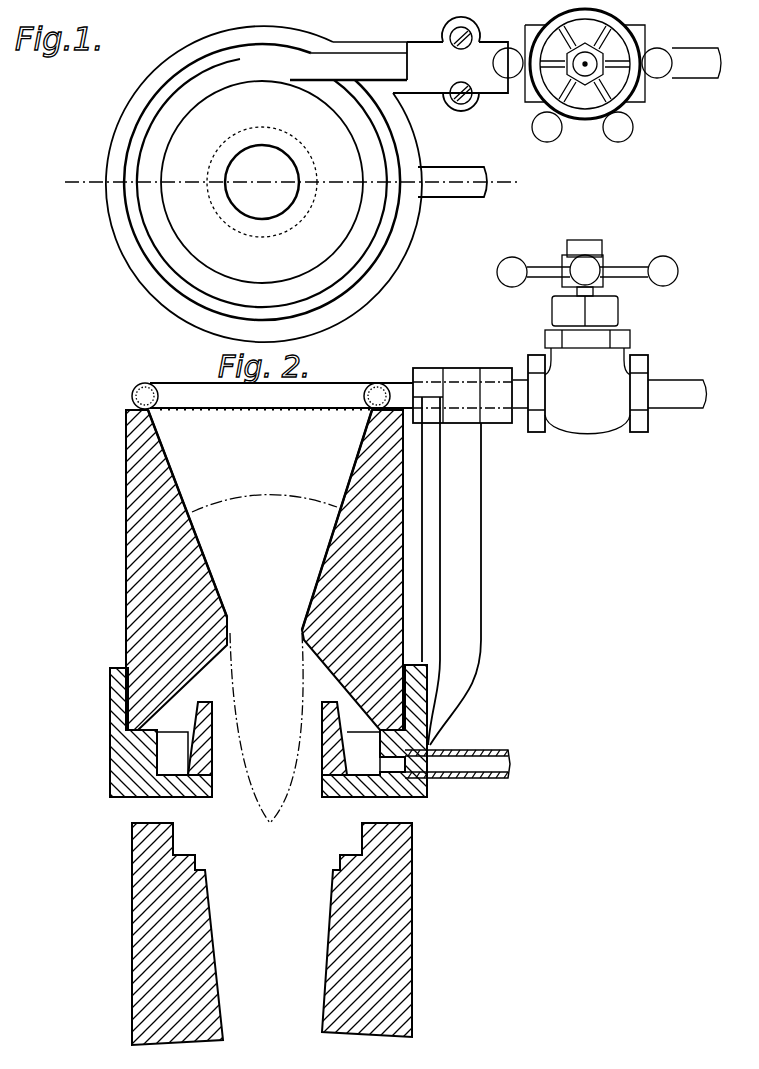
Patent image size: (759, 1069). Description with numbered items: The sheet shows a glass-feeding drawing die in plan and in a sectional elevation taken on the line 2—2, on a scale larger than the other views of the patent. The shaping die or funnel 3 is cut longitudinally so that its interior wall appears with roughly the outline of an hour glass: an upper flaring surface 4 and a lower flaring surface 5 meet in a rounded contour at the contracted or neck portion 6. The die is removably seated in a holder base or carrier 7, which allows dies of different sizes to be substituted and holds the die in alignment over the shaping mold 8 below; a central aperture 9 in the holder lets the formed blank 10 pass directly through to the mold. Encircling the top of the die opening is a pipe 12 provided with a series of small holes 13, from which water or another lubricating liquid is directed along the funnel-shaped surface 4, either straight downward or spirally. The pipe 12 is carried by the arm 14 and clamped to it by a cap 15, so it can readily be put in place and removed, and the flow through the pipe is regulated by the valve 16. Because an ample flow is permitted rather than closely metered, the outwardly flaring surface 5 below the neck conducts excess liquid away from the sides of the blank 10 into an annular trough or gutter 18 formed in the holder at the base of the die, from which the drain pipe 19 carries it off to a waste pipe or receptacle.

In FIG. 1, the section line 2— 2 is at (294, 182).
In FIG. 1, the shaping die or funnel 3 is at (145, 247).
In FIG. 2, the shaping die or funnel 3 is at (130, 494).
In FIG. 1, the upper flaring surface 4 is at (342, 147).
In FIG. 2, the upper flaring surface 4 is at (182, 492).
In FIG. 2, the lower flaring surface 5 is at (317, 668).
In FIG. 1, the contracted or neck portion 6 is at (240, 213).
In FIG. 2, the contracted or neck portion 6 is at (302, 633).
In FIG. 1, the holder base or carrier 7 is at (162, 297).
In FIG. 2, the holder base or carrier 7 is at (110, 712).
In FIG. 2, the shaping mold 8 is at (397, 883).
In FIG. 2, the central aperture 9 is at (223, 788).
In FIG. 2, the formed blank 10 is at (305, 797).
In FIG. 1, the pipe 12 is at (373, 220).
In FIG. 2, the pipe 12 is at (342, 387).
In FIG. 2, the small holes 13 is at (208, 412).
In FIG. 2, the arm 14 is at (473, 525).
In FIG. 1, the cap 15 is at (491, 35).
In FIG. 2, the cap 15 is at (490, 372).
In FIG. 1, the valve 16 is at (586, 118).
In FIG. 2, the valve 16 is at (583, 422).
In FIG. 2, the annular trough or gutter 18 is at (353, 753).
In FIG. 2, the drain pipe 19 is at (478, 778).